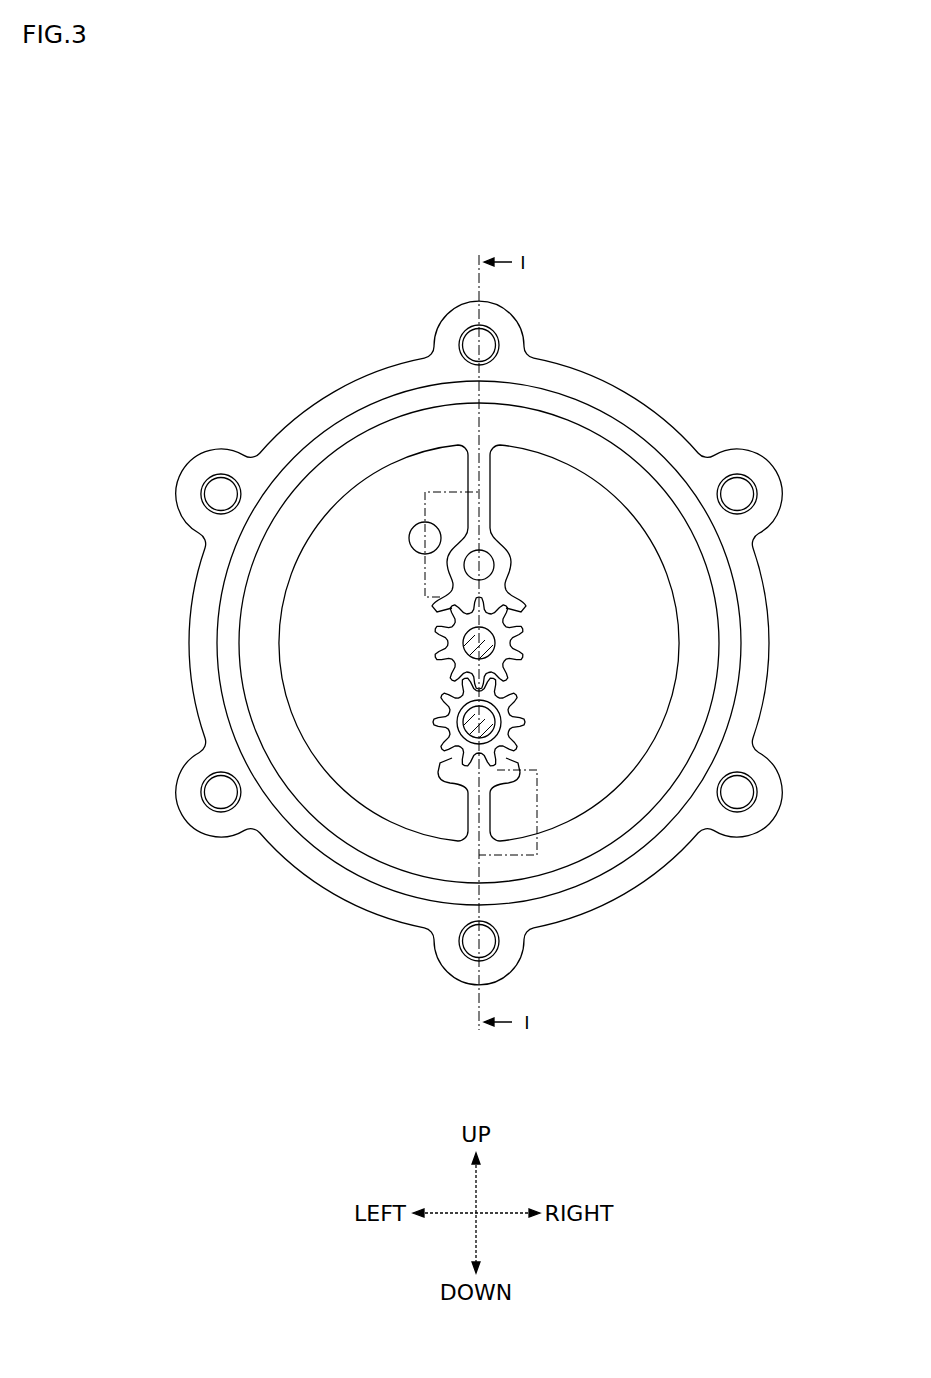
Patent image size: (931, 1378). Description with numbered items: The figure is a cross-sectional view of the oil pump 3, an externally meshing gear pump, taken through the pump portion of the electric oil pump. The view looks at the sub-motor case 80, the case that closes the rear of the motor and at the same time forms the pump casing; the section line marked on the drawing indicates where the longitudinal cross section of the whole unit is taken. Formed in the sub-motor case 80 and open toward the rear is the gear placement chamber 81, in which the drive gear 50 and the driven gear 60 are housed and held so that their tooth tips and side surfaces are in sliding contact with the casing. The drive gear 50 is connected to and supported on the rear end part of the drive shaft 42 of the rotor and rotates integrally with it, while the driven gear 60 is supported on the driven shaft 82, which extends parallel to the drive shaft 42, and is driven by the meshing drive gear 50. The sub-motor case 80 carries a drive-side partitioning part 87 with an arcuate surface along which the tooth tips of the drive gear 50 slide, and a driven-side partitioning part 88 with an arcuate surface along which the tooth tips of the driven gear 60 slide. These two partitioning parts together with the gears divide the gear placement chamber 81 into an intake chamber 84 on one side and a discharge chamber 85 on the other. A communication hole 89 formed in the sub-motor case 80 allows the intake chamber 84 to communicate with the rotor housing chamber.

The oil pump 3 is at (737, 297).
The sub-motor case 80 is at (608, 396).
The gear placement chamber 81 is at (453, 480).
The driven shaft 82 is at (452, 704).
The intake chamber 84 is at (337, 641).
The discharge chamber 85 is at (663, 641).
The drive-side partitioning part 87 is at (495, 548).
The driven-side partitioning part 88 is at (480, 816).
The communication hole 89 is at (410, 535).
The drive shaft 42 is at (497, 645).
The drive gear 50 is at (515, 657).
The driven gear 60 is at (520, 722).